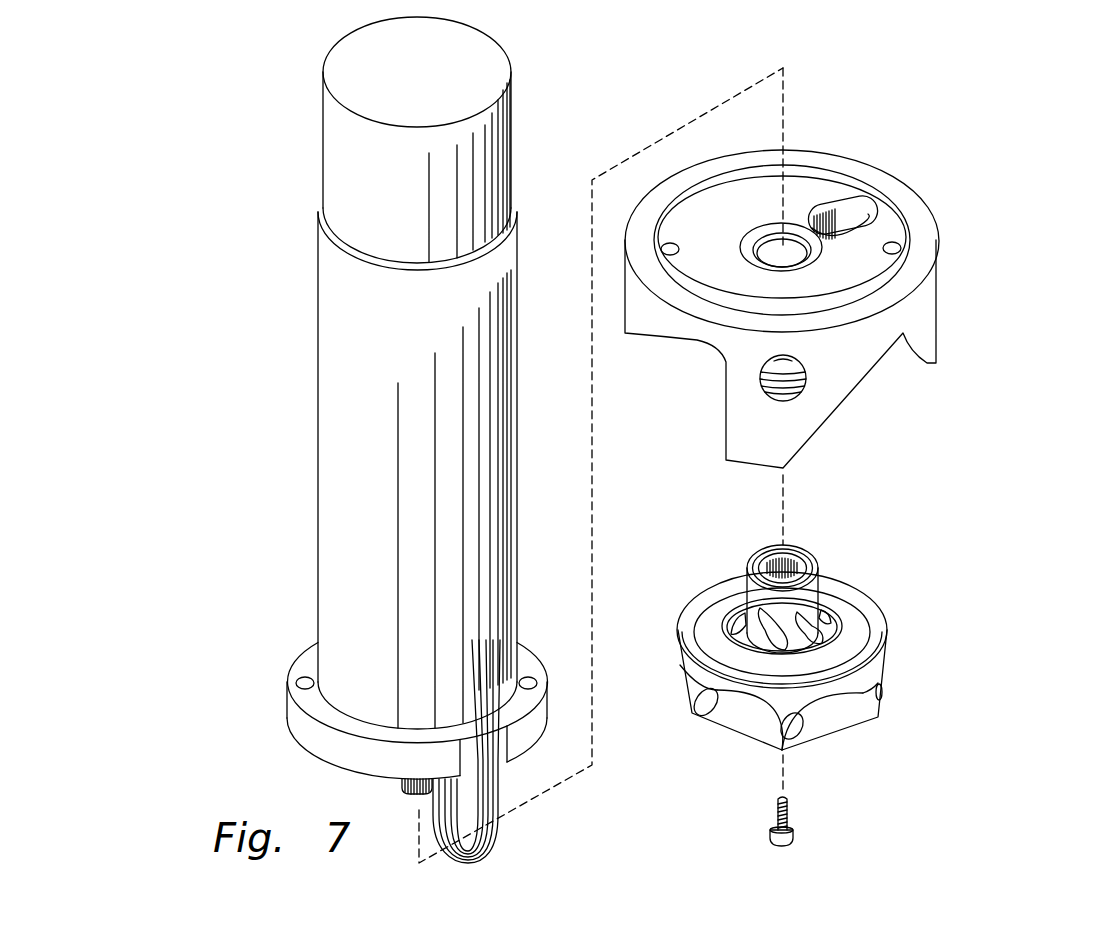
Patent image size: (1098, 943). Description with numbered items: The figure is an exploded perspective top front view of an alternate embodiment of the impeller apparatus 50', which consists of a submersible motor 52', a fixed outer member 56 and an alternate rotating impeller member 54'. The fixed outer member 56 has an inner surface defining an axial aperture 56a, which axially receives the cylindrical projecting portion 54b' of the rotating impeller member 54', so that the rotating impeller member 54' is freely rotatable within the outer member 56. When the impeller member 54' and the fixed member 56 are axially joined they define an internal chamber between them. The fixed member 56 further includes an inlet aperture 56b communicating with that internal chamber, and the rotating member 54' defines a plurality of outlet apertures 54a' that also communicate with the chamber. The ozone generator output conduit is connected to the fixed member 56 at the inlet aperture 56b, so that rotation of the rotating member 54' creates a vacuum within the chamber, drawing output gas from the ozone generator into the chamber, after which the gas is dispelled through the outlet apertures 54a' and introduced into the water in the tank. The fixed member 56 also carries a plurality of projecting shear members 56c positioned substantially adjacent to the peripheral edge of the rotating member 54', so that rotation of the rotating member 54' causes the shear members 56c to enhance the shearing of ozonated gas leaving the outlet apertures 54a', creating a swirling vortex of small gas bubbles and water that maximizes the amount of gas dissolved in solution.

The impeller apparatus 50' is at (368, 535).
The submersible motor 52' is at (354, 139).
The rotating impeller member 54' is at (824, 654).
The outlet apertures 54a' is at (801, 744).
The cylindrical projecting portion 54b' is at (824, 590).
The fixed outer member 56 is at (966, 187).
The axial aperture 56a is at (793, 247).
The inlet aperture 56b is at (767, 385).
The projecting shear members 56c is at (930, 330).